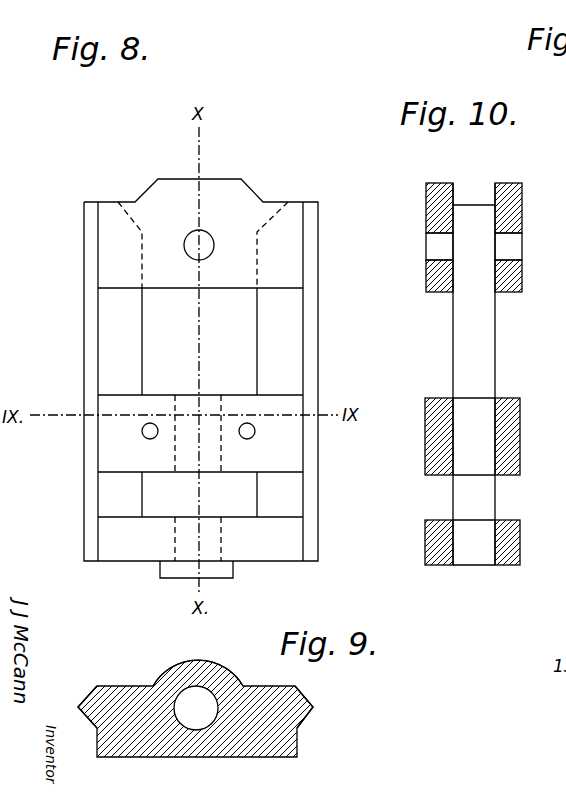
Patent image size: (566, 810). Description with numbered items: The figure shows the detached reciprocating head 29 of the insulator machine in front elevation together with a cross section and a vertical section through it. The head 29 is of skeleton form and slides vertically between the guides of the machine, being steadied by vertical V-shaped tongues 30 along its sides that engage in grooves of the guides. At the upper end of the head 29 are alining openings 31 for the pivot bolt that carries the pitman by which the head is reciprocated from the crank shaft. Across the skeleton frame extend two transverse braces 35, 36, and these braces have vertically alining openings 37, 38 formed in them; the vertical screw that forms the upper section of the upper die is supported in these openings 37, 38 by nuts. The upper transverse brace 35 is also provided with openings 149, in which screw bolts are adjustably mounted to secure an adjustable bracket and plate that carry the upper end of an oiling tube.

In FIG. 8, the reciprocating head 29 is at (200, 378).
In FIG. 10, the reciprocating head 29 is at (474, 374).
In FIG. 9, the reciprocating head 29 is at (252, 722).
In FIG. 8, the V-shaped tongues 30 is at (88, 333).
In FIG. 9, the V-shaped tongues 30 is at (78, 707).
In FIG. 8, the alining openings 31 is at (206, 250).
In FIG. 10, the alining openings 31 is at (440, 247).
In FIG. 8, the transverse brace 35 is at (290, 443).
In FIG. 10, the transverse brace 35 is at (516, 397).
In FIG. 9, the transverse brace 35 is at (172, 679).
In FIG. 8, the transverse brace 36 is at (287, 533).
In FIG. 10, the transverse brace 36 is at (520, 530).
In FIG. 8, the opening 37 is at (212, 398).
In FIG. 10, the opening 37 is at (472, 440).
In FIG. 8, the opening 38 is at (186, 541).
In FIG. 10, the opening 38 is at (475, 544).
In FIG. 8, the openings 149 is at (143, 437).